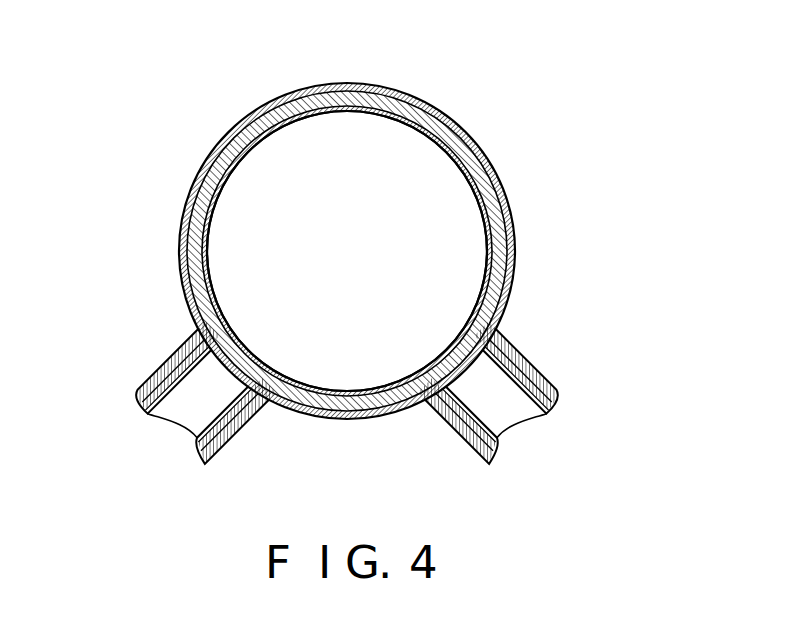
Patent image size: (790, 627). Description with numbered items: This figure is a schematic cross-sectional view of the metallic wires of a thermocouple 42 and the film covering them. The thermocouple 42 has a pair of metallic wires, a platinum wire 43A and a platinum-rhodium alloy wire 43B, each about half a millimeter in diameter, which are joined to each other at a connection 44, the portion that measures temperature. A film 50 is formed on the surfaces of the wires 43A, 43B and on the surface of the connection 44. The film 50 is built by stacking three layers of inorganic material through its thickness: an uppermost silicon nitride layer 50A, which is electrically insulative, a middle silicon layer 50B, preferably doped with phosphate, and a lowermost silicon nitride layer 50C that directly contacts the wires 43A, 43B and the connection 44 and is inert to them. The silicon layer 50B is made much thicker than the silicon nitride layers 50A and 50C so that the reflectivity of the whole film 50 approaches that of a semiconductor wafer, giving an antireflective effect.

The thermocouple 42 is at (353, 259).
The connection 44 is at (265, 222).
The platinum wire 43A is at (202, 375).
The platinum-rhodium alloy wire 43B is at (480, 395).
The film 50 is at (424, 235).
The silicon nitride layer 50A is at (513, 282).
The silicon layer 50B is at (505, 248).
The silicon nitride layer 50C is at (502, 193).